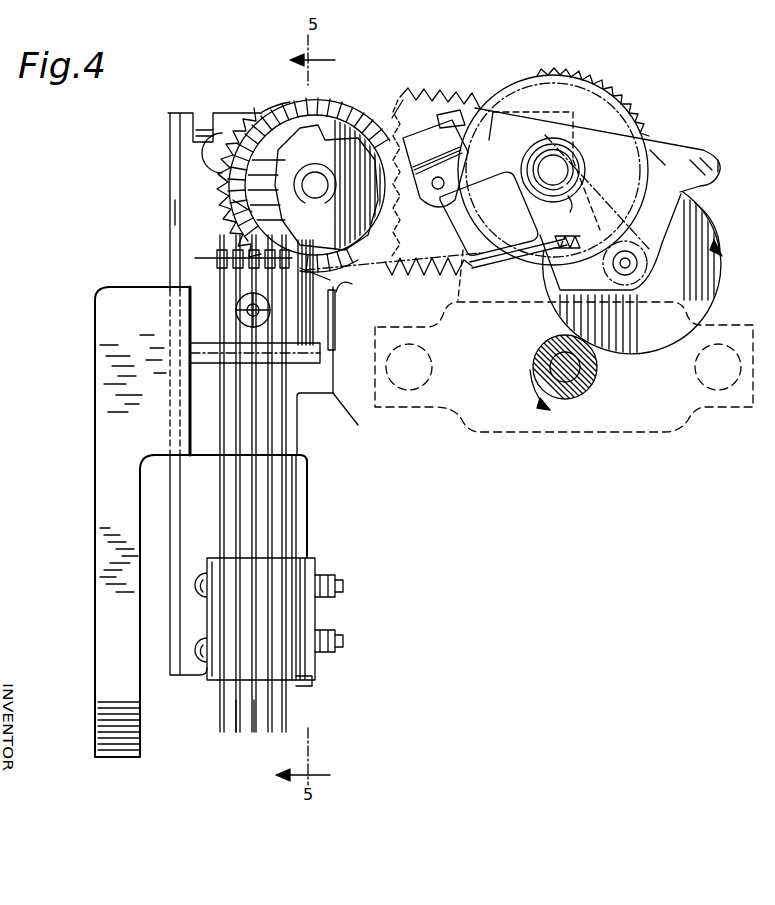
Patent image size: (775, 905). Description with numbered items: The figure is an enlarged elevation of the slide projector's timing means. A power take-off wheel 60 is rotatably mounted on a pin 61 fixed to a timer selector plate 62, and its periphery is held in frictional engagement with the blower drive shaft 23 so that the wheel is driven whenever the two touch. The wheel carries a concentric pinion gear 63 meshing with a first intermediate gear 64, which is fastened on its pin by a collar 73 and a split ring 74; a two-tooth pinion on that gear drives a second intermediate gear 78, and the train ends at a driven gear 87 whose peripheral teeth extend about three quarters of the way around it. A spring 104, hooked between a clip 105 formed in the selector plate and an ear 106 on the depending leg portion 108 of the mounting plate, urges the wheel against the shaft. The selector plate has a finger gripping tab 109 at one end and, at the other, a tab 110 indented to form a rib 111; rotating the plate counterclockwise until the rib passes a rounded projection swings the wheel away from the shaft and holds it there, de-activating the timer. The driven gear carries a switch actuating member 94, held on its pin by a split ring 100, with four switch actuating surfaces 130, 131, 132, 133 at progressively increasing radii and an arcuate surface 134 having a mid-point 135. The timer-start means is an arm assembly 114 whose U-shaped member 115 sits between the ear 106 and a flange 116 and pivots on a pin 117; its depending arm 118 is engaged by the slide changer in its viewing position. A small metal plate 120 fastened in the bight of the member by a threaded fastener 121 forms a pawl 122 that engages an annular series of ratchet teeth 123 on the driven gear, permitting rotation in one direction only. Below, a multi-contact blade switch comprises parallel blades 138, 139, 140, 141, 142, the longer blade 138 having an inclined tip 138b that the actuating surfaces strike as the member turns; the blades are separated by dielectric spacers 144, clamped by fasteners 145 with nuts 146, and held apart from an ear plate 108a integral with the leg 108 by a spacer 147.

The drive shaft 23 is at (598, 370).
The power take-off wheel 60 is at (719, 272).
The pin 61 is at (630, 266).
The timer selector plate 62 is at (672, 152).
The pinion gear 63 is at (723, 231).
The first intermediate gear 64 is at (615, 115).
The collar 73 is at (578, 163).
The split ring 74 is at (574, 202).
The second intermediate gear 78 is at (441, 98).
The driven gear 87 is at (290, 100).
The switch actuating member 94 is at (378, 274).
The split ring 100 is at (328, 178).
The spring 104 is at (443, 304).
The clip 105 is at (532, 249).
The ear 106 is at (358, 400).
The depending leg portion 108 is at (297, 493).
The ear plate 108a is at (308, 686).
The finger gripping tab 109 is at (720, 167).
The tab 110 is at (402, 98).
The rib 111 is at (435, 172).
The arm assembly 114 is at (96, 392).
The U-shaped member 115 is at (310, 398).
The flange 116 is at (172, 212).
The pin 117 is at (205, 362).
The depending arm 118 is at (100, 616).
The small metal plate 120 is at (190, 316).
The threaded fastener 121 is at (253, 298).
The pawl 122 is at (336, 318).
The ratchet teeth 123 is at (220, 160).
The switch actuating surface 130 is at (228, 180).
The switch actuating surface 131 is at (270, 110).
The switch actuating surface 132 is at (350, 99).
The switch actuating surface 133 is at (350, 296).
The arcuate surface 134 is at (230, 188).
The mid-point 135 is at (258, 226).
The blade 138 is at (286, 474).
The inclined tip 138b is at (245, 205).
The blade 139 is at (270, 525).
The blade 140 is at (254, 538).
The blade 141 is at (237, 527).
The blade 142 is at (222, 542).
The dielectric spacers 144 is at (255, 702).
The fasteners 145 is at (338, 638).
The nuts 146 is at (332, 574).
The spacer 147 is at (306, 686).